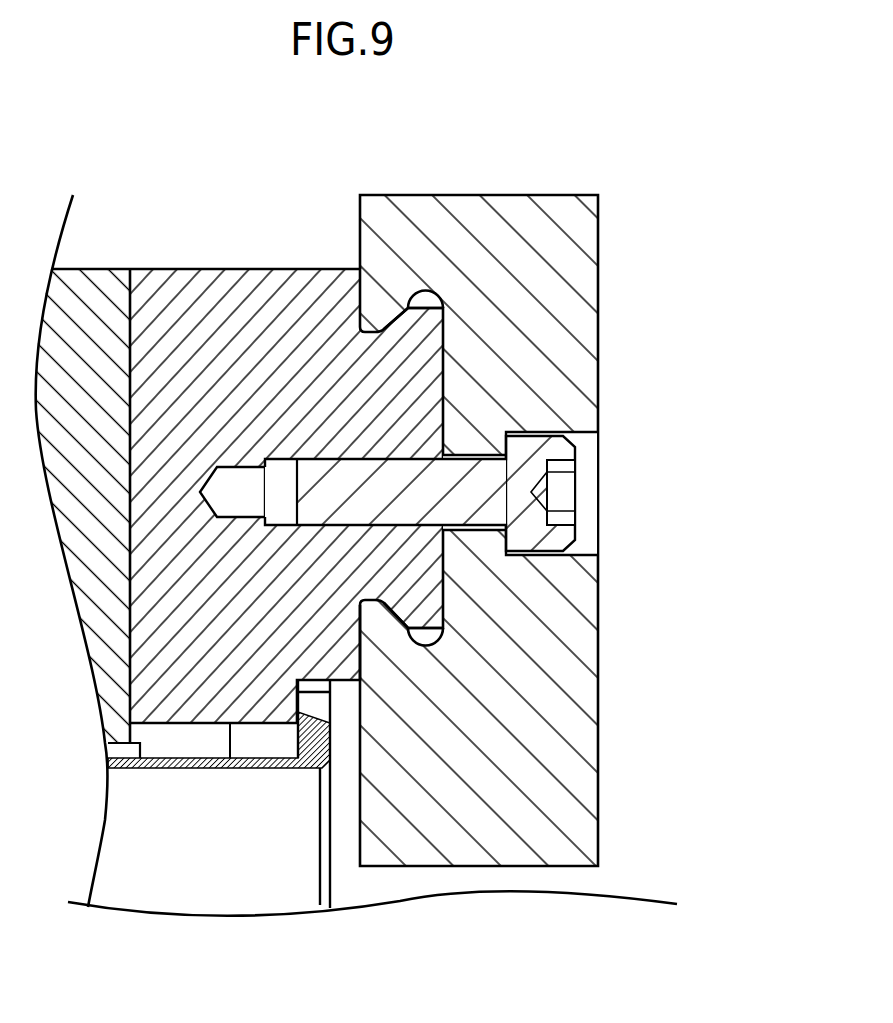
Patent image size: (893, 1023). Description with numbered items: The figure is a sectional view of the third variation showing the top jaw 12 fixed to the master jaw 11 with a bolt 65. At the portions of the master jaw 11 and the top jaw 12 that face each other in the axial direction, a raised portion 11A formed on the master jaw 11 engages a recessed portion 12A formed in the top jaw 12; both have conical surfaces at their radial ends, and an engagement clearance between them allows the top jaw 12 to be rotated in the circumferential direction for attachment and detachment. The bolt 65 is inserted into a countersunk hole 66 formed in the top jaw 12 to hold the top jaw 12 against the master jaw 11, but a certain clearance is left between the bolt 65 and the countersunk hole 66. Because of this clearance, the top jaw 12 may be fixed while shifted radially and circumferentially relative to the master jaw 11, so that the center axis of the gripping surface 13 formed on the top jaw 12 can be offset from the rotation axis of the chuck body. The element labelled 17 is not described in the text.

The master jaw 11 is at (248, 302).
The raised portion 11A is at (418, 345).
The top jaw 12 is at (582, 235).
The recessed portion 12A is at (438, 588).
The gripping surface 13 is at (478, 866).
The counterbore 17 is at (580, 547).
The bolt 65 is at (455, 475).
The countersunk hole 66 is at (480, 528).